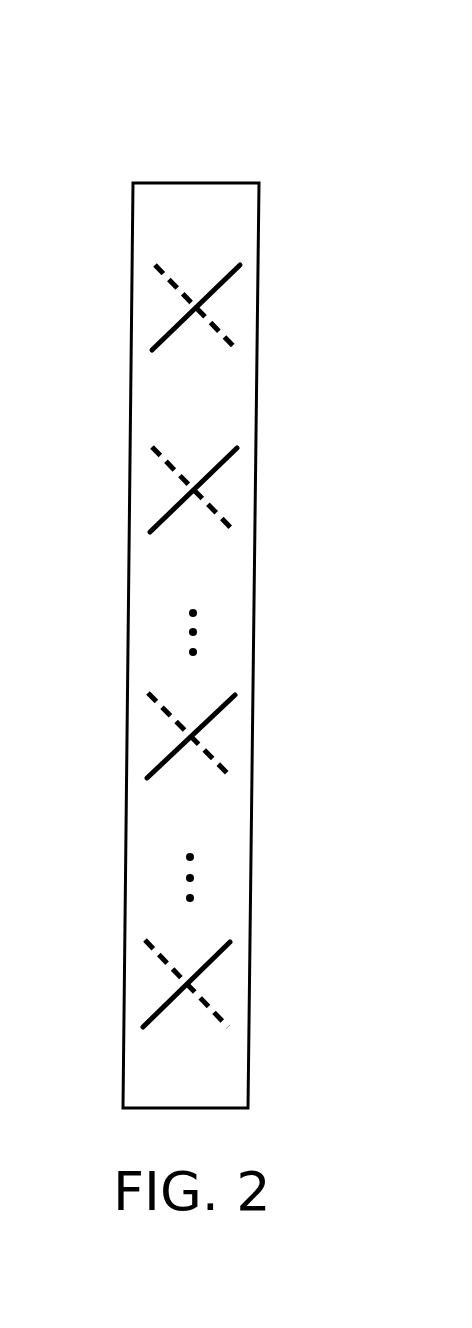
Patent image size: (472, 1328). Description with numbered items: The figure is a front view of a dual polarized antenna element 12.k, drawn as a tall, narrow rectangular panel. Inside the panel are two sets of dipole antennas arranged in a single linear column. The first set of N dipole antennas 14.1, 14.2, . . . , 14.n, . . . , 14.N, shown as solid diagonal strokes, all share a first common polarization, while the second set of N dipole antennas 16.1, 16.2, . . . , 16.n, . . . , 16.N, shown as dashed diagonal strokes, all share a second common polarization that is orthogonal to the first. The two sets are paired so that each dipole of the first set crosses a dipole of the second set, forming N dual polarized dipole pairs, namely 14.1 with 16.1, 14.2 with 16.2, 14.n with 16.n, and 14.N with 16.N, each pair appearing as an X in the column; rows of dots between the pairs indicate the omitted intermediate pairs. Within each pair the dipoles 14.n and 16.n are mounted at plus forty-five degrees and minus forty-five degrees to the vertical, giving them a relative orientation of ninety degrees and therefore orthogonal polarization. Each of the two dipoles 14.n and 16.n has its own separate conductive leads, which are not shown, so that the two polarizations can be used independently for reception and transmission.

The switching stage k 12.k is at (247, 134).
The dipole antenna 14.1 is at (155, 335).
The dipole antenna 16.1 is at (233, 343).
The dipole antenna 14.2 is at (155, 522).
The dipole antenna 16.2 is at (230, 523).
The dipole antenna 14.n is at (152, 772).
The dipole antenna 16.n is at (227, 772).
The dipole antenna 14.N is at (150, 1017).
The dipole antenna 16.N is at (223, 1020).